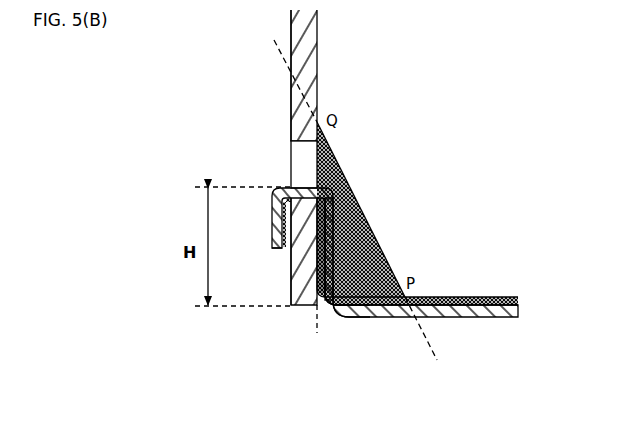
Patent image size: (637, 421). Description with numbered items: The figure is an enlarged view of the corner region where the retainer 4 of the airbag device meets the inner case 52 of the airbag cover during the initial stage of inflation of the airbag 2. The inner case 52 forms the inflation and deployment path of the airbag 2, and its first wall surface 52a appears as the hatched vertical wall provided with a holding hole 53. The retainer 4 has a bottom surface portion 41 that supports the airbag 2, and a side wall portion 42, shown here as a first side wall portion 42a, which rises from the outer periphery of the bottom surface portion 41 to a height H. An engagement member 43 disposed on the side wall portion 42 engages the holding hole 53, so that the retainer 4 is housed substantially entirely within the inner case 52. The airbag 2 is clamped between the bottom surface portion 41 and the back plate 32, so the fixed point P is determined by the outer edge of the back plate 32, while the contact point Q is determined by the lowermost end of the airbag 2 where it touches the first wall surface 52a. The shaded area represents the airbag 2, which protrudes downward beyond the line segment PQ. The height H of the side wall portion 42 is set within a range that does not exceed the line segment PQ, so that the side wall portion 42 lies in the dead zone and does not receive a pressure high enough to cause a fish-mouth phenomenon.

The airbag 2 is at (368, 213).
The retainer 4 is at (448, 282).
The back plate 32 is at (468, 297).
The bottom surface portion 41 is at (471, 318).
The side wall portion 42 is at (363, 323).
The first side wall portion 42a is at (370, 309).
The engagement member 43 is at (271, 220).
The inner case 52 is at (265, 153).
The first wall surface 52a is at (291, 100).
The holding hole 53 is at (300, 151).